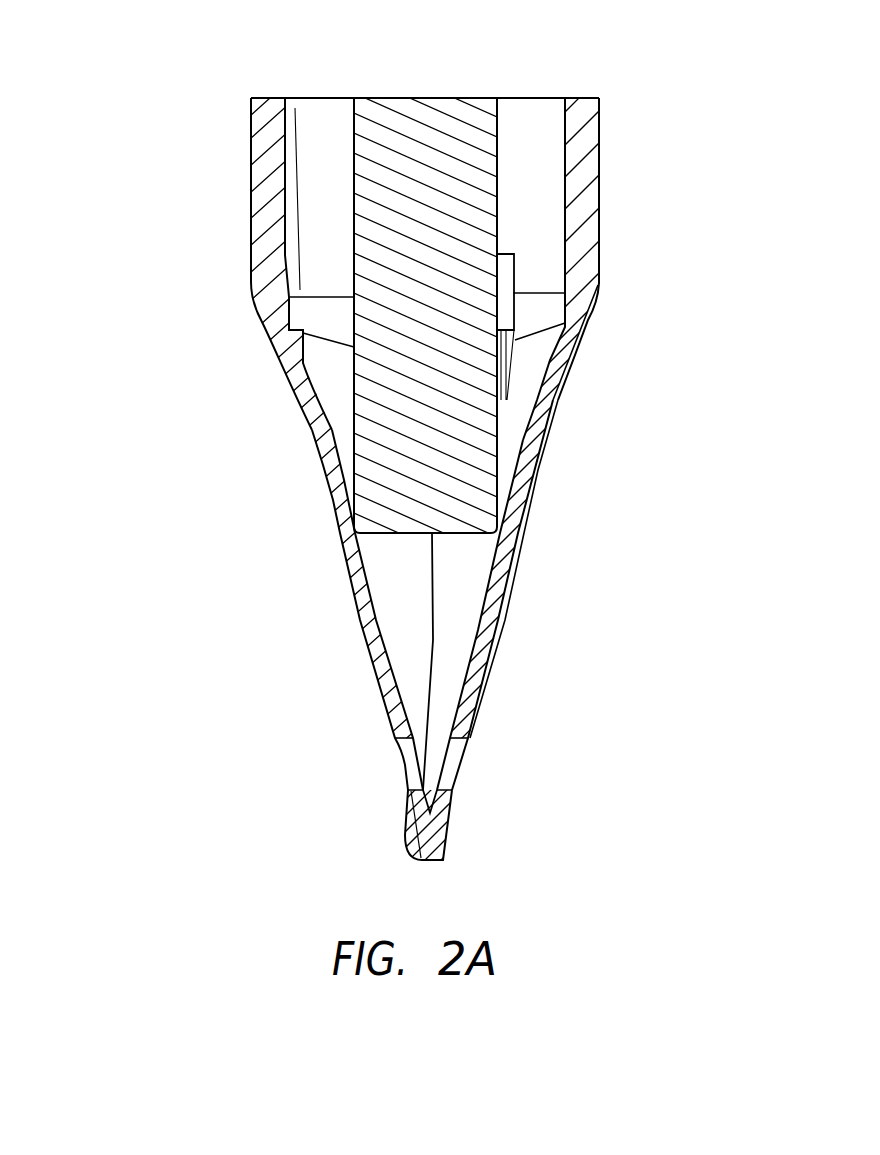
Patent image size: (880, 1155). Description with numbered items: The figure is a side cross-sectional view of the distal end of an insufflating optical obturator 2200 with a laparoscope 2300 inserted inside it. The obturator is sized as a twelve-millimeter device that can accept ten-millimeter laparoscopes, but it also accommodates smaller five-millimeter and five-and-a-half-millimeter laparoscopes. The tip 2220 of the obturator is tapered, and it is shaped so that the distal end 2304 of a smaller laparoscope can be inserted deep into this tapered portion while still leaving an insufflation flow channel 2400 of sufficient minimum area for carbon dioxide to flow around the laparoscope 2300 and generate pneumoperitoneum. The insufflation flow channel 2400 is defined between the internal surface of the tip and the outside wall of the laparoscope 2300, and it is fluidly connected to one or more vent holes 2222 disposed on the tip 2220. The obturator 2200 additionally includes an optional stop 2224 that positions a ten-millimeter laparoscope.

The insufflating optical obturator 2200 is at (251, 202).
The tip 2220 is at (348, 577).
The vent hole 2222 is at (450, 772).
The stop 2224 is at (515, 263).
The laparoscope 2300 is at (354, 152).
The distal end 2304 is at (468, 535).
The insufflation flow channel 2400 is at (542, 183).